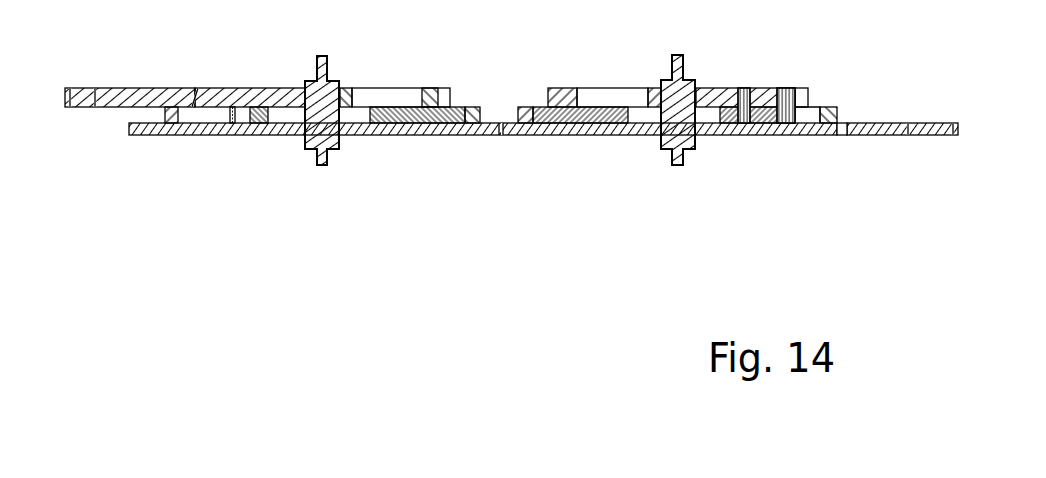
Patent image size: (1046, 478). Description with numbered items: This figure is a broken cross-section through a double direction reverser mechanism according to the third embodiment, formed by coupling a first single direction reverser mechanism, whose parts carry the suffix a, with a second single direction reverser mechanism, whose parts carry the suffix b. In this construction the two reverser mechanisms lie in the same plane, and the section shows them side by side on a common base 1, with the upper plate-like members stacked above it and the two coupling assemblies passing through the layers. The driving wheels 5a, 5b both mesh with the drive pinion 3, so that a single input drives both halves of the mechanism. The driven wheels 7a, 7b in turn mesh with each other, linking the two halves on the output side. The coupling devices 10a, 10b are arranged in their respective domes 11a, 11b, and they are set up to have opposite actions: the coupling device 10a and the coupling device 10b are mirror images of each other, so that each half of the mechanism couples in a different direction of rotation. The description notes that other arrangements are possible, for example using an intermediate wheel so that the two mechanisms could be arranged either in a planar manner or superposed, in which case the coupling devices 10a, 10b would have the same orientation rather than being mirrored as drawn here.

The base plate 1 is at (873, 128).
The drive pinion 3 is at (118, 92).
The driving wheel 5a is at (253, 98).
The driving wheel 5b is at (720, 93).
The driven wheel 7a is at (232, 123).
The driven wheel 7b is at (767, 135).
The coupling device 10a is at (412, 121).
The coupling device 10b is at (554, 122).
The dome 11a is at (190, 104).
The dome 11b is at (645, 109).